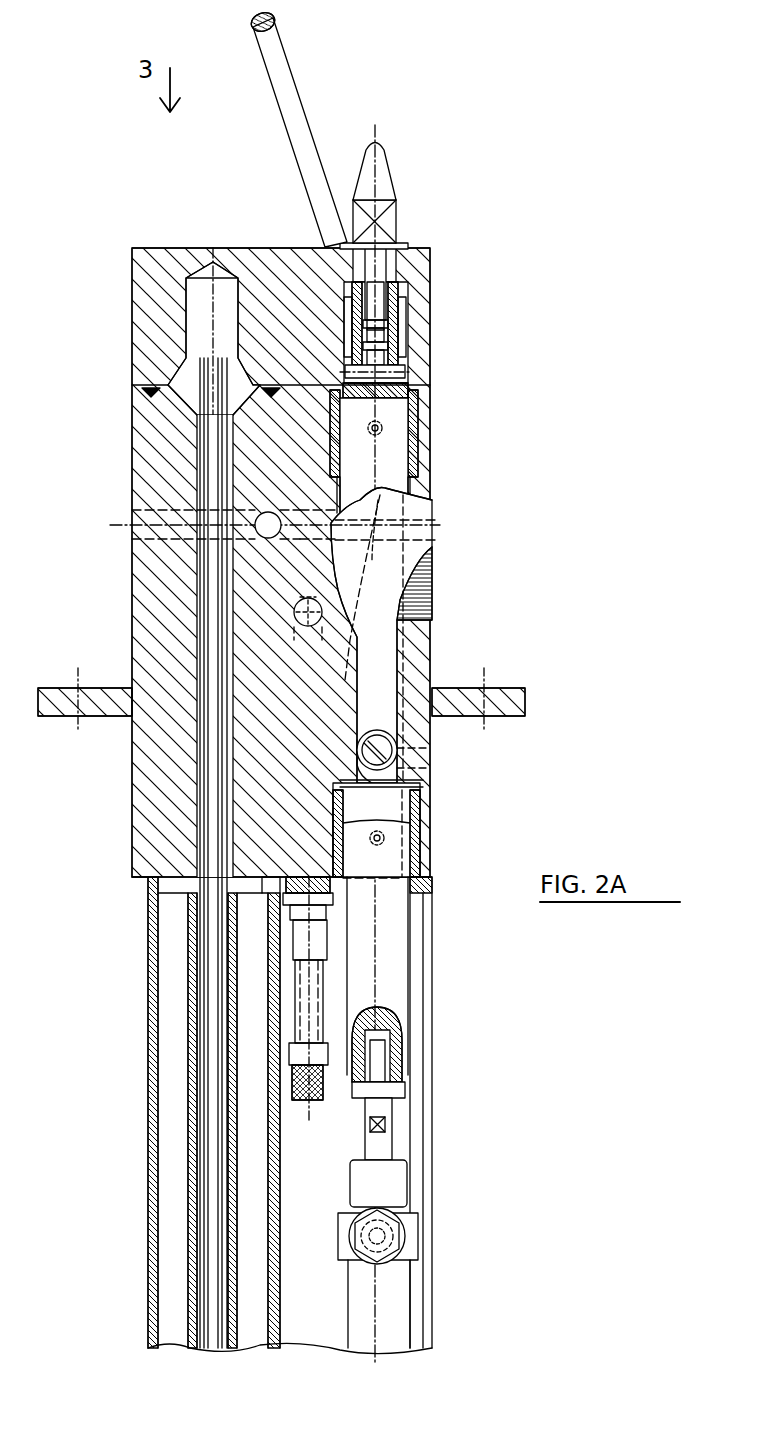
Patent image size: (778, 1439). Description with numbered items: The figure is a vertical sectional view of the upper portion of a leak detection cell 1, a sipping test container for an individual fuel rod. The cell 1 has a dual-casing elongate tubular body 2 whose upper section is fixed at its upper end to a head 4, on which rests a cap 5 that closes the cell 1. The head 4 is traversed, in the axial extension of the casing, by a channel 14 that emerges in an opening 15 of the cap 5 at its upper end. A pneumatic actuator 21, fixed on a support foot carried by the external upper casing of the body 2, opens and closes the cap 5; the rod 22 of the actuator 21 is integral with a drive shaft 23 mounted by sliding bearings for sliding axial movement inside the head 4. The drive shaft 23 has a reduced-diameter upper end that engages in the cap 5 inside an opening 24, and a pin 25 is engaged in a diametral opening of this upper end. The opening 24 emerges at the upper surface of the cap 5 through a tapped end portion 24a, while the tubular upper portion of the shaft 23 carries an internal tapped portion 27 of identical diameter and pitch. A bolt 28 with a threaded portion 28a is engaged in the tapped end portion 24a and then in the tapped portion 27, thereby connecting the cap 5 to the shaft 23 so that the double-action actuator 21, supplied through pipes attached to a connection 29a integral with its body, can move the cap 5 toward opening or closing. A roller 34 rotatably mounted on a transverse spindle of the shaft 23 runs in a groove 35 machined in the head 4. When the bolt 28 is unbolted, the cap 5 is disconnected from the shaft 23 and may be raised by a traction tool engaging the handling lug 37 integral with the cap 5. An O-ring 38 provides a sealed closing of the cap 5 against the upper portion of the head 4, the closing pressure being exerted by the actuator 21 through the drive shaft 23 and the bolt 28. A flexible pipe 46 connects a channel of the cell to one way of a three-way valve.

The leak detection cell 1 is at (146, 1318).
The tubular body 2 is at (150, 1242).
The head 4 is at (282, 833).
The cap 5 is at (150, 276).
The channel 14 is at (226, 607).
The opening 15 is at (188, 318).
The pneumatic actuator 21 is at (400, 1314).
The rod 22 is at (388, 1142).
The drive shaft 23 is at (387, 953).
The opening 24 is at (405, 318).
The tapped end portion 24a is at (400, 262).
The pin 25 is at (395, 390).
The tapped portion 27 is at (383, 332).
The bolt 28 is at (400, 215).
The threaded portion 28a is at (380, 364).
The connection 29a is at (392, 1230).
The roller 34 is at (382, 758).
The groove 35 is at (400, 650).
The handling lug 37 is at (295, 92).
The O-ring 38 is at (150, 396).
The flexible pipe 46 is at (320, 1002).